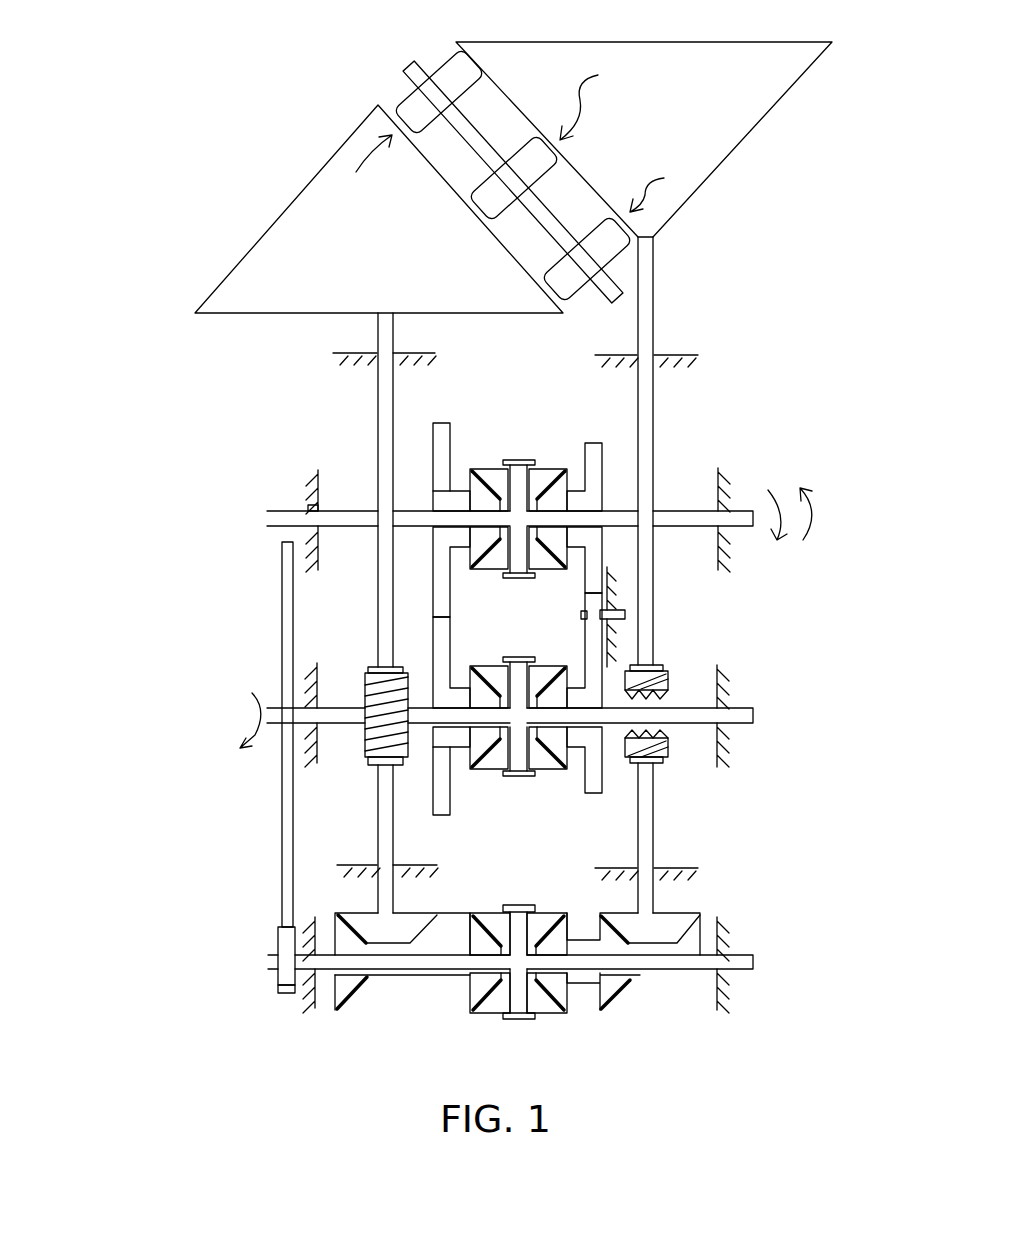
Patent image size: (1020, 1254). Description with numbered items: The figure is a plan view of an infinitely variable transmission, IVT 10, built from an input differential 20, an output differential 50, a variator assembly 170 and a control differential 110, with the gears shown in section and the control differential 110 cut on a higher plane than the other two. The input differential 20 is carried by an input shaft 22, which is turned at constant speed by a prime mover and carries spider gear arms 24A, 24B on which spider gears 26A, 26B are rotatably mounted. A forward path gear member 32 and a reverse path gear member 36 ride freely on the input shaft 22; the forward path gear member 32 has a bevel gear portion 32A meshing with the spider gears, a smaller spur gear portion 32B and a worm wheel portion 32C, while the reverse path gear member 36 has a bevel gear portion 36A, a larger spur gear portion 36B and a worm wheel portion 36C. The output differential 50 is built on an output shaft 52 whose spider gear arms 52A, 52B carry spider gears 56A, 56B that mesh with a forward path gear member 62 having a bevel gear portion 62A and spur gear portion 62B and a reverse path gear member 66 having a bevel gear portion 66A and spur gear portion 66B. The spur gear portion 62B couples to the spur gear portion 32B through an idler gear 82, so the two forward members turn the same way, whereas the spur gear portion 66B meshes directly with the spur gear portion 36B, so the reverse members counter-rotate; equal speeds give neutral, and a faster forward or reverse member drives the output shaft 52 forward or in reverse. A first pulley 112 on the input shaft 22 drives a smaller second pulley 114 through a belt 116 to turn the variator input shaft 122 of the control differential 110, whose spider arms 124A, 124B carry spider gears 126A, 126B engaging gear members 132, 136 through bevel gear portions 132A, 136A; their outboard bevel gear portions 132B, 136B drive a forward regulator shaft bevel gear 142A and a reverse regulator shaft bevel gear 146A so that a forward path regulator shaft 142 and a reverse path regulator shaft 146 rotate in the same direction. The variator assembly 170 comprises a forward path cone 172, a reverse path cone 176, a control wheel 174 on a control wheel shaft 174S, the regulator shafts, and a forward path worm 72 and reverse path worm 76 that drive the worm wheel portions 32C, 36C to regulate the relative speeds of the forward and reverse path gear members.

The IVT 10 is at (184, 571).
The input differential 20 is at (758, 692).
The input shaft 22 is at (705, 707).
The spider gear arm 24A is at (520, 776).
The spider gear arm 24B is at (512, 656).
The spider gear 26A is at (475, 769).
The spider gear 26B is at (478, 666).
The forward path gear member 32 is at (603, 822).
The bevel gear portion 32A is at (560, 746).
The spur gear portion 32B is at (591, 793).
The worm wheel portion 32C is at (661, 668).
The reverse path gear member 36 is at (452, 838).
The bevel gear portion 36A is at (455, 805).
The spur gear portion 36B is at (450, 812).
The worm wheel portion 36C is at (372, 668).
The output differential 50 is at (756, 560).
The output shaft 52 is at (348, 511).
The spider gear arm 52A is at (521, 578).
The spider gear arm 52B is at (512, 460).
The spider gear 56A is at (498, 552).
The spider gear 56B is at (505, 416).
The forward path gear member 62 is at (588, 397).
The bevel gear portion 62A is at (569, 455).
The spur gear portion 62B is at (625, 421).
The reverse path gear member 66 is at (458, 382).
The bevel gear portion 66A is at (483, 447).
The spur gear portion 66B is at (437, 412).
The forward path worm 72 is at (660, 760).
The reverse path worm 76 is at (370, 761).
The idler gear 82 is at (600, 615).
The control differential 110 is at (766, 941).
The first pulley 112 is at (282, 872).
The second pulley 114 is at (278, 992).
The belt 116 is at (280, 905).
The variator input shaft 122 is at (327, 980).
The spider arm 124A is at (516, 1019).
The spider arm 124B is at (512, 905).
The spider gear 126A is at (490, 1013).
The spider gear 126B is at (548, 890).
The gear member 132 is at (650, 1019).
The bevel gear portion 132A is at (582, 1013).
The outboard bevel gear portion 132B is at (627, 986).
The gear member 136 is at (355, 1028).
The bevel gear portion 136A is at (470, 1005).
The outboard bevel gear portion 136B is at (341, 991).
The forward path regulator shaft 142 is at (653, 840).
The forward regulator shaft bevel gear 142A is at (686, 913).
The reverse path regulator shaft 146 is at (378, 840).
The reverse regulator shaft bevel gear 146A is at (418, 913).
The variator assembly 170 is at (736, 198).
The forward path cone 172 is at (655, 135).
The control wheel 174 is at (443, 72).
The control wheel shaft 174S is at (405, 70).
The reverse path cone 176 is at (390, 255).